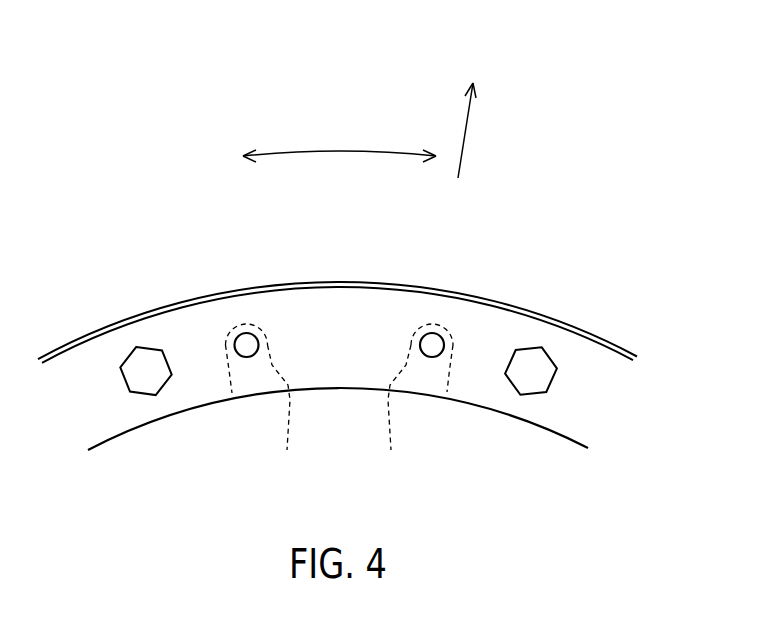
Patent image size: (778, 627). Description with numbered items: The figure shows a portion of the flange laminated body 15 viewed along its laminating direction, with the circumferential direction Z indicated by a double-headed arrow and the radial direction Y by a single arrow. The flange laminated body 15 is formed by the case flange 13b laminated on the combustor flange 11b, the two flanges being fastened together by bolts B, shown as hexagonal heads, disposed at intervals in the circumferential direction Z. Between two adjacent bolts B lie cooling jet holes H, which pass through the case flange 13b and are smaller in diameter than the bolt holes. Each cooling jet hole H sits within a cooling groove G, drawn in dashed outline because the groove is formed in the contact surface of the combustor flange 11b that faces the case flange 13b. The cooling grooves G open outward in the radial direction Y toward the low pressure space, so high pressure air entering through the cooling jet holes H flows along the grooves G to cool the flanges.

The flange laminated body 15 is at (342, 288).
The case flange 13b is at (193, 328).
The combustor flange 11b is at (490, 297).
The bolt B is at (148, 360).
The cooling jet hole H is at (246, 343).
The cooling groove G is at (340, 403).
The circumferential direction Z is at (339, 140).
The radial direction Y is at (470, 113).